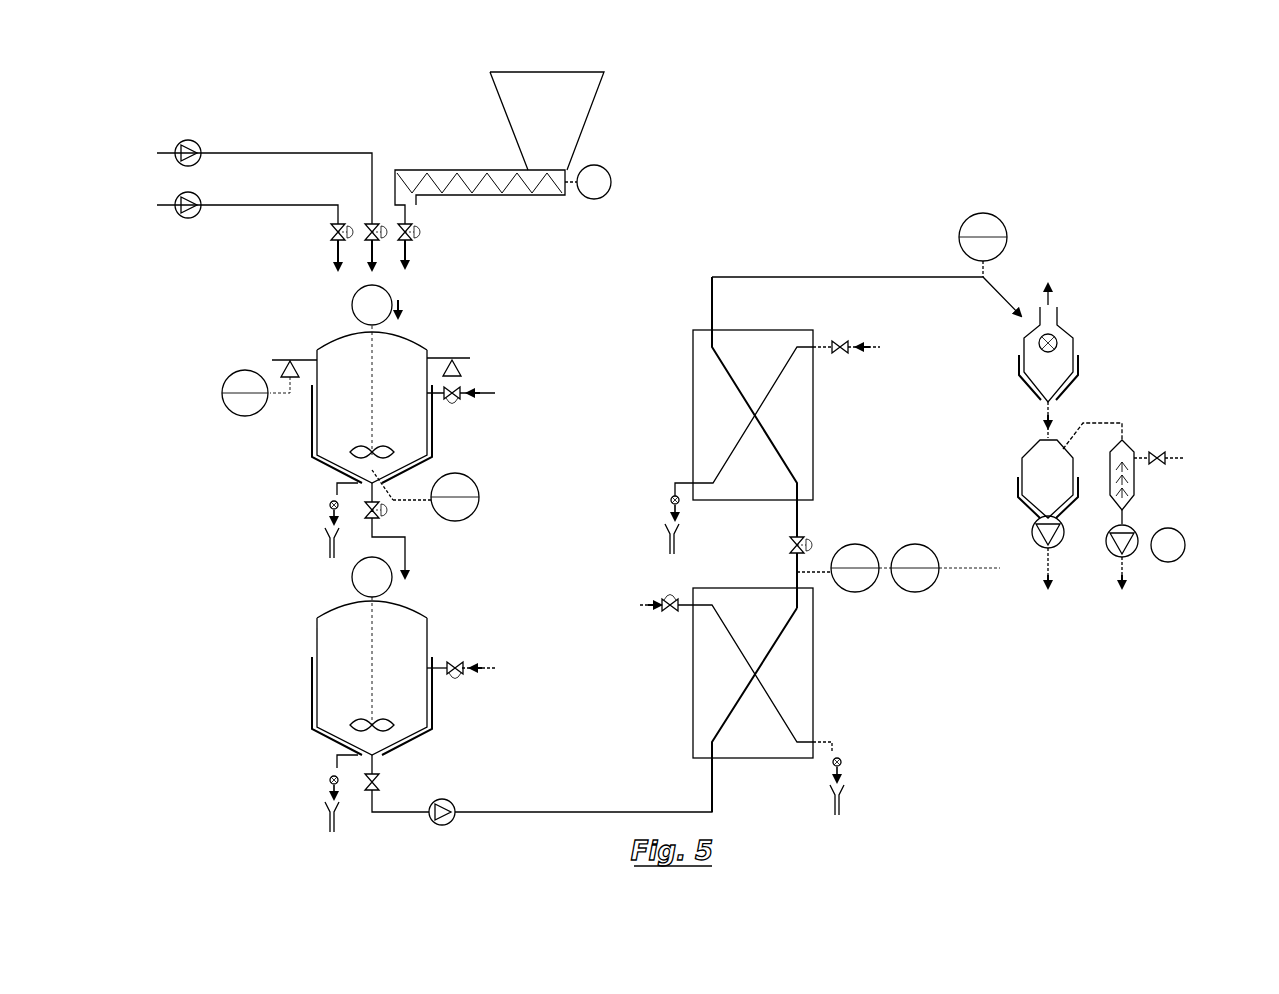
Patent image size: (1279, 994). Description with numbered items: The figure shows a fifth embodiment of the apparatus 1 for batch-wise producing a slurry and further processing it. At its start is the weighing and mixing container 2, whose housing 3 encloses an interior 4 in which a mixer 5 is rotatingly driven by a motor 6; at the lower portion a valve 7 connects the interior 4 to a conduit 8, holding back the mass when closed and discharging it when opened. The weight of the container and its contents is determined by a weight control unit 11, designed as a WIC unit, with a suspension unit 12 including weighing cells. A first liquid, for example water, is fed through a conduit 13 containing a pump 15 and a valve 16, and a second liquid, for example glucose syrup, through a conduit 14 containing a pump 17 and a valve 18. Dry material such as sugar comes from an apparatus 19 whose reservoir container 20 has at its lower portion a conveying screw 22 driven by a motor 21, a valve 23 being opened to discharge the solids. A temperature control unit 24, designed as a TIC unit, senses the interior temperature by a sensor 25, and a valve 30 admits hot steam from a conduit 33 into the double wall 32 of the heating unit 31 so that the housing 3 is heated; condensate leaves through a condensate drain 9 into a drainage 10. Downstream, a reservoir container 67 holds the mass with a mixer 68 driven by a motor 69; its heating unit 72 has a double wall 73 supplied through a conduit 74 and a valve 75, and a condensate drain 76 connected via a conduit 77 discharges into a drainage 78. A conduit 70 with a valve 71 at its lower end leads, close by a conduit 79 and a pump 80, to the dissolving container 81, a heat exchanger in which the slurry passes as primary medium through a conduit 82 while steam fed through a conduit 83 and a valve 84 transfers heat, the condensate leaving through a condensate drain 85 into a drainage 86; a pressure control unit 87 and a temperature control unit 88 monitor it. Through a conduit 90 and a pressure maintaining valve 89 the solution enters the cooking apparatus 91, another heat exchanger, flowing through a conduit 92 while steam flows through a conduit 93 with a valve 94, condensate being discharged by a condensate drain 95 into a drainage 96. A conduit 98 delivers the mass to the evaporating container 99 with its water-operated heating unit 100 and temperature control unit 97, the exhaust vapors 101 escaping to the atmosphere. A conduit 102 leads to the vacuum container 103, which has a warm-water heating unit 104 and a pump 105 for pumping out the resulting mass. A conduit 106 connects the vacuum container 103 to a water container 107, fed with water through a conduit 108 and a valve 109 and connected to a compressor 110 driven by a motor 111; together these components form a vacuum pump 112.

The apparatus 1 is at (312, 122).
The weighing and mixing container 2 is at (393, 272).
The housing 3 is at (347, 345).
The interior 4 is at (283, 377).
The mixer 5 is at (313, 455).
The motor 6 is at (353, 296).
The valve 7 is at (380, 521).
The conduit 8 is at (406, 560).
The condensate drain 9 is at (326, 540).
The drainage 10 is at (352, 572).
The weight control unit 11 is at (237, 405).
The suspension unit 12 is at (228, 376).
The conduit 13 is at (214, 208).
The conduit 14 is at (172, 157).
The pump 15 is at (167, 210).
The valve 16 is at (333, 240).
The pump 17 is at (178, 142).
The valve 18 is at (370, 224).
The apparatus for introducing dry material 19 is at (530, 60).
The reservoir container 20 is at (573, 92).
The motor 21 is at (600, 165).
The conveying screw 22 is at (437, 180).
The valve 23 is at (398, 300).
The temperature control unit 24 is at (473, 513).
The sensor 25 is at (329, 507).
The valve 30 is at (461, 391).
The heating unit 31 is at (313, 419).
The double wall 32 is at (335, 484).
The conduit 33 is at (483, 395).
The reservoir container 67 is at (317, 633).
The mixer 68 is at (360, 722).
The motor 69 is at (335, 607).
The conduit 70 is at (380, 764).
The valve 71 is at (381, 789).
The heating unit 72 is at (311, 717).
The double wall 73 is at (320, 735).
The conduit 74 is at (436, 670).
The valve 75 is at (462, 664).
The condensate drain 76 is at (329, 782).
The conduit 77 is at (333, 762).
The drainage 78 is at (327, 820).
The conduit 79 is at (402, 811).
The pump 80 is at (452, 805).
The dissolving container 81 is at (814, 672).
The conduit 82 is at (781, 637).
The conduit 83 is at (774, 700).
The valve 84 is at (669, 613).
The condensate drain 85 is at (841, 758).
The drainage 86 is at (845, 803).
The pressure control unit 87 is at (860, 590).
The temperature control unit 88 is at (931, 585).
The valve 89 is at (801, 537).
The conduit 90 is at (798, 569).
The cooking apparatus 91 is at (697, 328).
The conduit 92 is at (725, 363).
The conduit 93 is at (777, 380).
The valve 94 is at (840, 338).
The condensate drain 95 is at (668, 496).
The drainage 96 is at (666, 535).
The temperature control unit 97 is at (988, 212).
The conduit 98 is at (890, 276).
The evaporating container 99 is at (1025, 322).
The heating unit 100 is at (1083, 368).
The exhaust vapors 101 is at (1052, 296).
The conduit 102 is at (1057, 413).
The vacuum container 103 is at (1118, 424).
The heating unit 104 is at (1066, 513).
The pump 105 is at (1058, 542).
The conduit 106 is at (1060, 413).
The water container 107 is at (1128, 432).
The conduit 108 is at (1140, 460).
The valve 109 is at (1158, 455).
The compressor 110 is at (1126, 533).
The motor 111 is at (1177, 553).
The vacuum pump 112 is at (1144, 489).